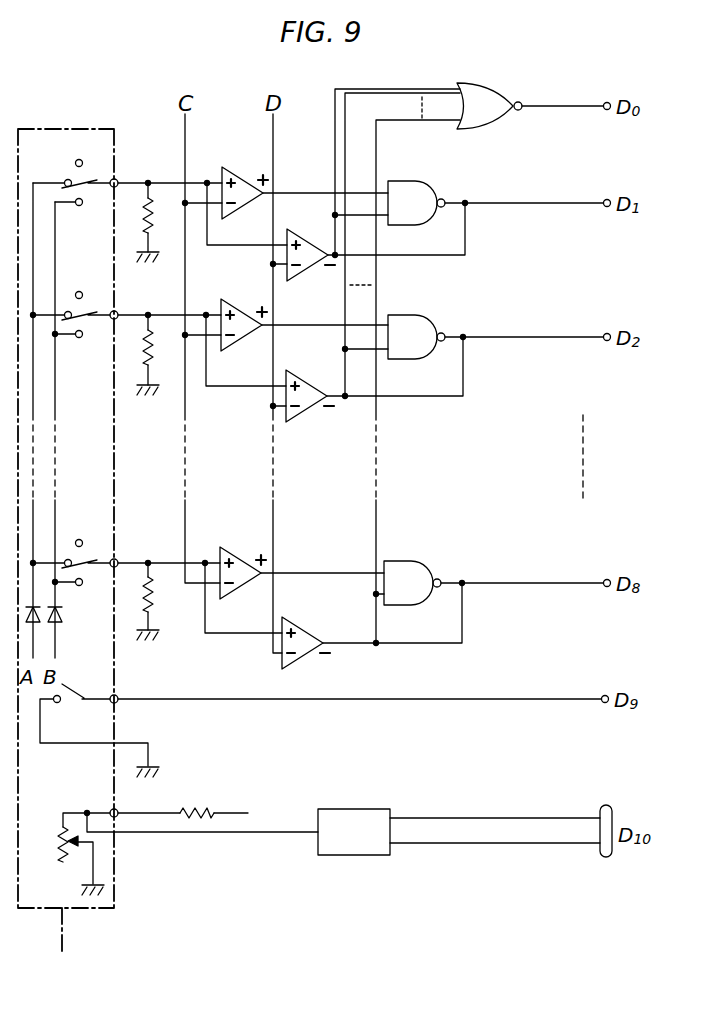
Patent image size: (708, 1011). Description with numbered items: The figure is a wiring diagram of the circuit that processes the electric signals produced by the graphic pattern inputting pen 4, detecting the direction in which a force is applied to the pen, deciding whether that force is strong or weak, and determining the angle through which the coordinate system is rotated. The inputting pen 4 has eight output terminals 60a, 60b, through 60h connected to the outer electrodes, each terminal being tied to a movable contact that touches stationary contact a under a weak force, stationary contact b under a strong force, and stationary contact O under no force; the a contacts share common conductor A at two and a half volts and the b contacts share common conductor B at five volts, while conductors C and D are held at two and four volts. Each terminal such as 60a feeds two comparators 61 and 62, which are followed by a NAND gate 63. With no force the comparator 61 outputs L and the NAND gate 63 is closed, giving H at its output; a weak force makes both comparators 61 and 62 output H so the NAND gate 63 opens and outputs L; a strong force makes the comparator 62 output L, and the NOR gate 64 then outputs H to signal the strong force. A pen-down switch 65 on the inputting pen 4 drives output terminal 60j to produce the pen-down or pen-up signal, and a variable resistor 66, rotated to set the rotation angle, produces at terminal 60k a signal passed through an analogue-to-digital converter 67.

The graphic pattern inputting pen 4 is at (95, 129).
The output terminal 60a is at (94, 181).
The output terminal 60b is at (94, 313).
The output terminal 60h is at (94, 561).
The output terminal 60j is at (129, 689).
The output terminal 60k is at (133, 803).
The comparator 61 is at (243, 167).
The comparator 62 is at (312, 231).
The NAND gate 63 is at (412, 181).
The NOR gate 64 is at (488, 83).
The pen-down switch 65 is at (70, 703).
The variable resistor 66 is at (60, 838).
The analogue-to-digital converter 67 is at (362, 809).